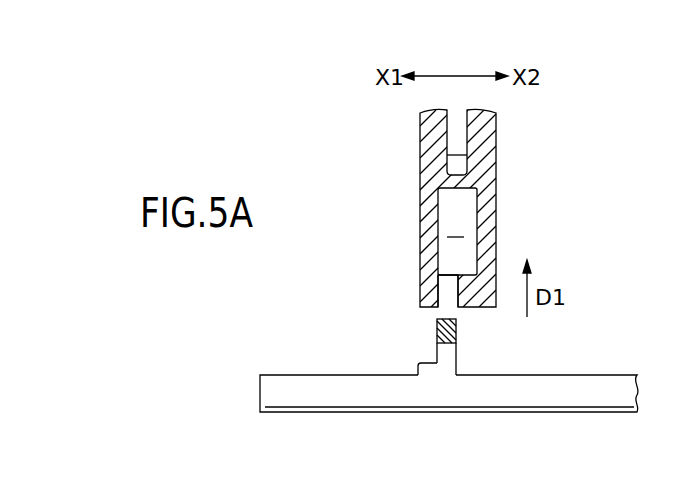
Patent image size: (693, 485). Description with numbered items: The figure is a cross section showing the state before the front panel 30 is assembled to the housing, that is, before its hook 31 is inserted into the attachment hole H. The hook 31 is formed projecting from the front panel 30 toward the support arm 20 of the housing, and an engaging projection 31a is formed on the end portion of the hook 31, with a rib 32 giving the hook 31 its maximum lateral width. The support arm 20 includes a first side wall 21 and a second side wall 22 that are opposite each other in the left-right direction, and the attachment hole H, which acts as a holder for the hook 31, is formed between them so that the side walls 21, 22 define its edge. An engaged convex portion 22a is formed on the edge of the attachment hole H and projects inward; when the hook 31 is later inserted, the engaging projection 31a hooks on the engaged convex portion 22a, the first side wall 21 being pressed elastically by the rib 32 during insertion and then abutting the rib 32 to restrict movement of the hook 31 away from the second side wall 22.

The support arm 20 is at (497, 133).
The first side wall 21 is at (427, 202).
The second side wall 22 is at (484, 228).
The engaged convex portion 22a is at (472, 283).
The front panel 30 is at (594, 385).
The hook 31 is at (457, 363).
The engaging projection 31a is at (449, 330).
The rib 32 is at (434, 359).